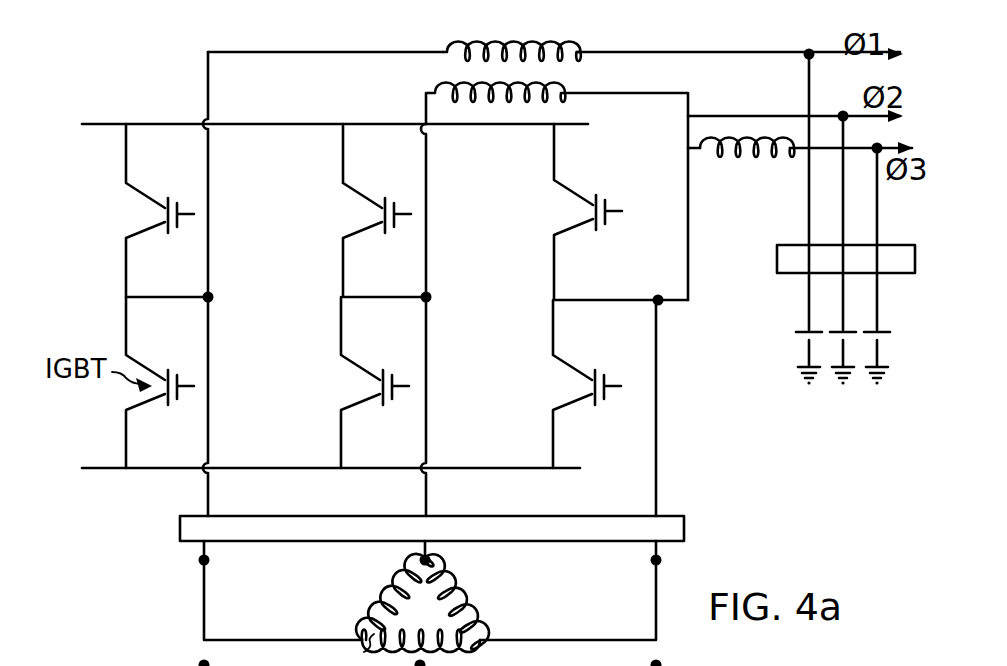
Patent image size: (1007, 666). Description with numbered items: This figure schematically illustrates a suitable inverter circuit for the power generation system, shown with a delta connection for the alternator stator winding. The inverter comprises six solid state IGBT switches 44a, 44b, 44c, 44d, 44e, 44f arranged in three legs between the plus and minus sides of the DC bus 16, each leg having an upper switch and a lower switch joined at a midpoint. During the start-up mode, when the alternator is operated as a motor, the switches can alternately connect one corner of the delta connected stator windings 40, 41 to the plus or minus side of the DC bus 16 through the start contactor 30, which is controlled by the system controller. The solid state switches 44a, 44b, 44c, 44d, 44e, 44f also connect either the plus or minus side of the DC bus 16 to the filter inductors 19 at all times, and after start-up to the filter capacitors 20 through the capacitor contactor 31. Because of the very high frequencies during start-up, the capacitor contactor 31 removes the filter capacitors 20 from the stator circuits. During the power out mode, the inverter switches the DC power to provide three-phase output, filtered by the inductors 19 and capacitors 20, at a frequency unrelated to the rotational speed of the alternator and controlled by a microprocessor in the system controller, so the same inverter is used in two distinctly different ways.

The DC bus 16 is at (102, 128).
The filter inductors 19 is at (566, 44).
The filter capacitors 20 is at (788, 338).
The start contactor 30 is at (686, 526).
The capacitor contactor 31 is at (777, 258).
The stator winding 40 is at (388, 596).
The stator winding 41 is at (455, 586).
The solid state switch 44a is at (149, 198).
The solid state switch 44b is at (146, 368).
The solid state switch 44c is at (370, 196).
The solid state switch 44d is at (360, 368).
The solid state switch 44e is at (596, 198).
The solid state switch 44f is at (576, 368).